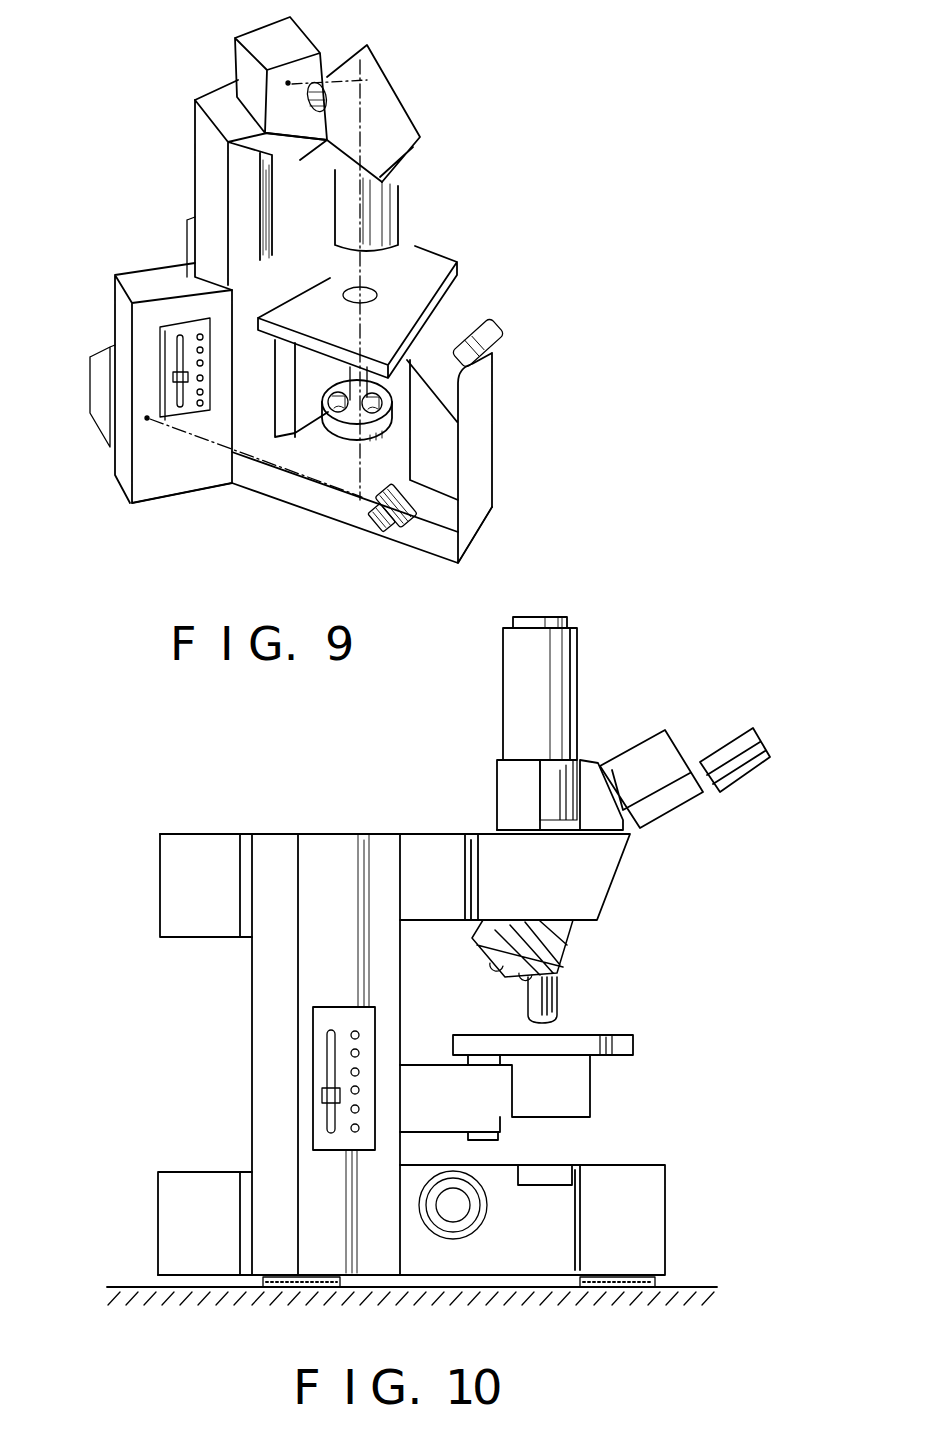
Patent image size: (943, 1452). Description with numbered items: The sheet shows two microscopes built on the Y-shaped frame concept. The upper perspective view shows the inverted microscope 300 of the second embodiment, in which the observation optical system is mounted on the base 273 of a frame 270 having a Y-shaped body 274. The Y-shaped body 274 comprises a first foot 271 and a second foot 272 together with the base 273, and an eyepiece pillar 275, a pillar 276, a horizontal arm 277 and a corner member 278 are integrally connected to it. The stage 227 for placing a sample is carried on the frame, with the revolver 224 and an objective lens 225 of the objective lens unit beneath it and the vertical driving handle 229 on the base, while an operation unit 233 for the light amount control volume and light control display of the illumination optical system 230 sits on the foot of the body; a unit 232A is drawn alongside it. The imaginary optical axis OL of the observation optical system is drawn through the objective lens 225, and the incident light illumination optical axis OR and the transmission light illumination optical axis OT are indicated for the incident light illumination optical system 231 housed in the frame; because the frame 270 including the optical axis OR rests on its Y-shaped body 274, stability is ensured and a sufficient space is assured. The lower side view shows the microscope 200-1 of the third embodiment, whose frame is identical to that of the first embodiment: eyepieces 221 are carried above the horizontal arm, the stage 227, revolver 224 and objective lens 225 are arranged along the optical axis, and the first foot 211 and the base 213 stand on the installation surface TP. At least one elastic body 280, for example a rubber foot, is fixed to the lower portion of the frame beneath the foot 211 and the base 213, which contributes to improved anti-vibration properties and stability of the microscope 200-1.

In FIG. 10, the microscope 200-1 is at (418, 822).
In FIG. 10, the first foot 211 is at (315, 1168).
In FIG. 10, the base 213 is at (657, 1202).
In FIG. 9, the eyepieces 221 is at (490, 363).
In FIG. 9, the revolver 224 is at (393, 430).
In FIG. 9, the objective lens 225 is at (352, 390).
In FIG. 9, the stage 227 is at (442, 265).
In FIG. 9, the vertical driving handle 229 is at (393, 527).
In FIG. 9, the illumination optical system 230 is at (408, 421).
In FIG. 9, the incident light illumination optical system 231 is at (315, 52).
In FIG. 9, the switch unit 232A is at (100, 423).
In FIG. 9, the operation unit 233 is at (160, 355).
In FIG. 9, the frame 270 is at (114, 300).
In FIG. 9, the first foot 271 is at (155, 492).
In FIG. 9, the second foot 272 is at (187, 233).
In FIG. 9, the base 273 is at (440, 550).
In FIG. 9, the Y-shaped body 274 is at (276, 507).
In FIG. 9, the eyepiece pillar 275 is at (482, 457).
In FIG. 9, the pillar 276 is at (207, 153).
In FIG. 9, the horizontal arm 277 is at (253, 135).
In FIG. 9, the corner member 278 is at (407, 123).
In FIG. 10, the elastic body 280 is at (287, 1287).
In FIG. 9, the inverted microscope 300 is at (414, 193).
In FIG. 9, the transmission light illumination optical axis OT is at (367, 80).
In FIG. 9, the imaginary optical axis OL is at (362, 258).
In FIG. 9, the incident light illumination optical axis OR is at (257, 463).
In FIG. 10, the table plane TP is at (688, 1287).